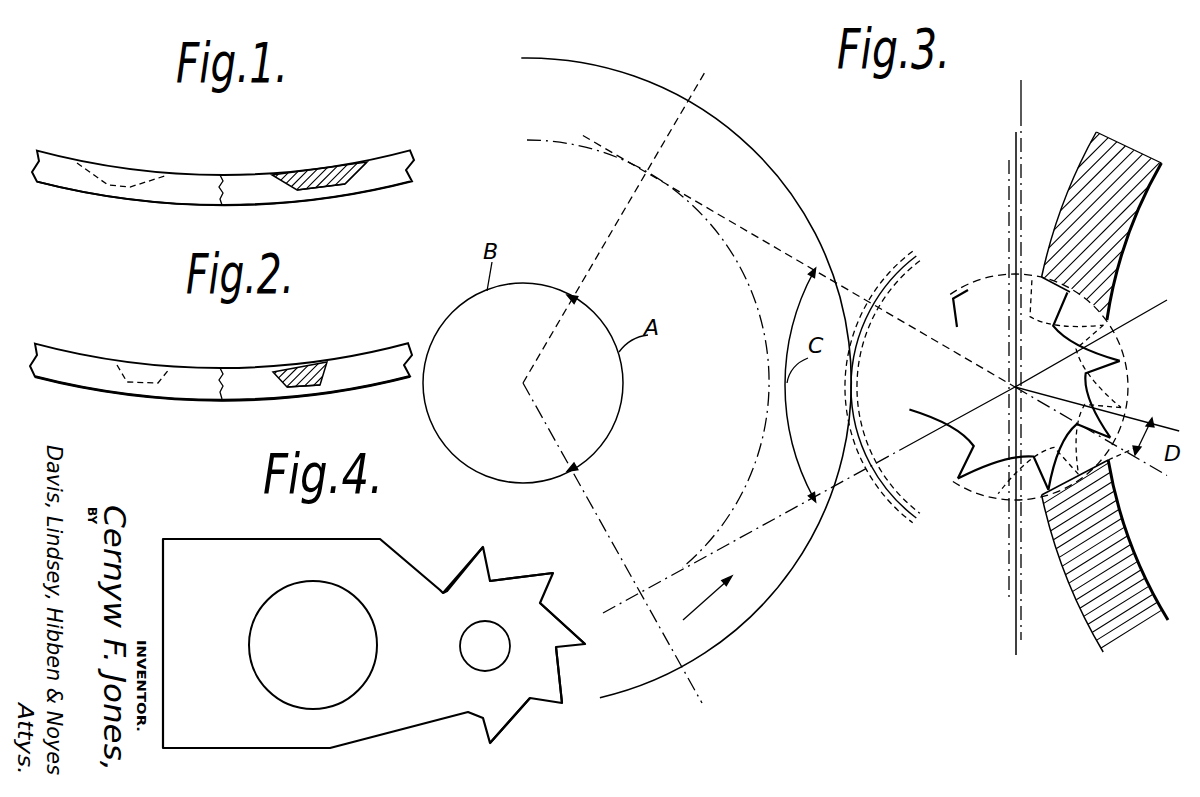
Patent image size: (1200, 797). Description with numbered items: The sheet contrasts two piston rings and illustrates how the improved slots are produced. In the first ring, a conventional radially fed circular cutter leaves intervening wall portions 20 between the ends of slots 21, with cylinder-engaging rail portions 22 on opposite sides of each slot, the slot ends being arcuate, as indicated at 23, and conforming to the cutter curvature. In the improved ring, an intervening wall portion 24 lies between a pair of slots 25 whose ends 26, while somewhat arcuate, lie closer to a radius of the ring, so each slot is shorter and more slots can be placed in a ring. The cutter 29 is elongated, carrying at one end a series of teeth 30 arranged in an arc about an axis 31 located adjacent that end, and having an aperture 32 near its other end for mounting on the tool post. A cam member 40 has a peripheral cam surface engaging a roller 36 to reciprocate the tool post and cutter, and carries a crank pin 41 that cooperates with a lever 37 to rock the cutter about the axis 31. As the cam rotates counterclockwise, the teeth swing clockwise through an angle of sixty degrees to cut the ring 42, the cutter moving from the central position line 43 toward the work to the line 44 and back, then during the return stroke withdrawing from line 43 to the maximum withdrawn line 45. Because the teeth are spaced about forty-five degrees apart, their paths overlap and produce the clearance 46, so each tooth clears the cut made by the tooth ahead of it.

In FIG. 1, the intervening wall portions 20 is at (318, 172).
In FIG. 1, the slots 21 is at (238, 185).
In FIG. 1, the cylinder-engaging rail portions 22 is at (275, 205).
In FIG. 1, the arcuate slot ends 23 is at (361, 180).
In FIG. 2, the intervening wall portion 24 is at (303, 367).
In FIG. 2, the slots 25 is at (240, 378).
In FIG. 2, the slot ends 26 is at (318, 387).
In FIG. 4, the cutter 29 is at (377, 557).
In FIG. 4, the teeth 30 is at (497, 727).
In FIG. 3, the teeth 30 is at (1040, 305).
In FIG. 4, the axis 31 is at (473, 653).
In FIG. 3, the axis 31 is at (1013, 388).
In FIG. 4, the aperture 32 is at (287, 600).
In FIG. 3, the roller 36 is at (900, 266).
In FIG. 3, the lever 37 is at (773, 520).
In FIG. 3, the cam member 40 is at (763, 590).
In FIG. 3, the crank pin 41 is at (643, 590).
In FIG. 3, the ring 42 is at (1117, 540).
In FIG. 3, the central position line 43 is at (1016, 150).
In FIG. 3, the advanced position line 44 is at (1021, 108).
In FIG. 3, the maximum withdrawn position line 45 is at (1009, 182).
In FIG. 3, the clearance 46 is at (1118, 463).